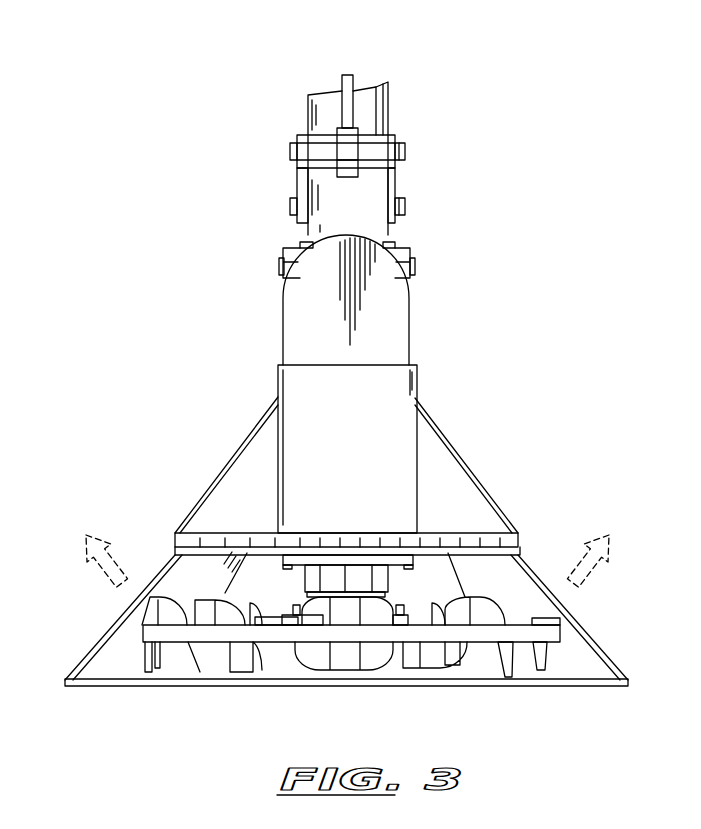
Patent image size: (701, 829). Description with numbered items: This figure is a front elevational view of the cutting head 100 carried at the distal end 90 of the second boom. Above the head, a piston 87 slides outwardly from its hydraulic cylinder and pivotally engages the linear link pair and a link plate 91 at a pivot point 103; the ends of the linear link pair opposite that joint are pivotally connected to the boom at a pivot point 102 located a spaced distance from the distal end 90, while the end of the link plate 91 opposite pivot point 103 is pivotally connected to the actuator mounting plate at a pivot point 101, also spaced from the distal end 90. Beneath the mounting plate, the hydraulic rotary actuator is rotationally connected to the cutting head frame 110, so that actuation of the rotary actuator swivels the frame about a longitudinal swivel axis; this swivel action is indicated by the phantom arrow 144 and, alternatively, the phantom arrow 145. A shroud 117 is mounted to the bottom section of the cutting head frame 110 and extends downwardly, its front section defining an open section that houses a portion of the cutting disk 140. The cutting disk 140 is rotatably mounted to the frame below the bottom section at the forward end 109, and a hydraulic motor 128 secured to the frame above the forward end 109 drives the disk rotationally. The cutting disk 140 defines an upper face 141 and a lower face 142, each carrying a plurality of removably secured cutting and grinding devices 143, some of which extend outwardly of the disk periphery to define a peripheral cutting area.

The piston 87 is at (345, 113).
The distal end 90 is at (380, 106).
The link plate 91 is at (338, 197).
The cutting head 100 is at (212, 440).
The pivot point 101 is at (413, 268).
The pivot point 102 is at (405, 207).
The pivot point 103 is at (405, 152).
The forward end 109 is at (367, 428).
The cutting head frame 110 is at (483, 481).
The shroud 117 is at (598, 643).
The hydraulic motor 128 is at (395, 318).
The cutting disk 140 is at (183, 635).
The upper face 141 is at (418, 605).
The lower face 142 is at (492, 643).
The cutting and grinding devices 143 is at (150, 605).
The arrow 144 is at (105, 538).
The arrow 145 is at (619, 547).